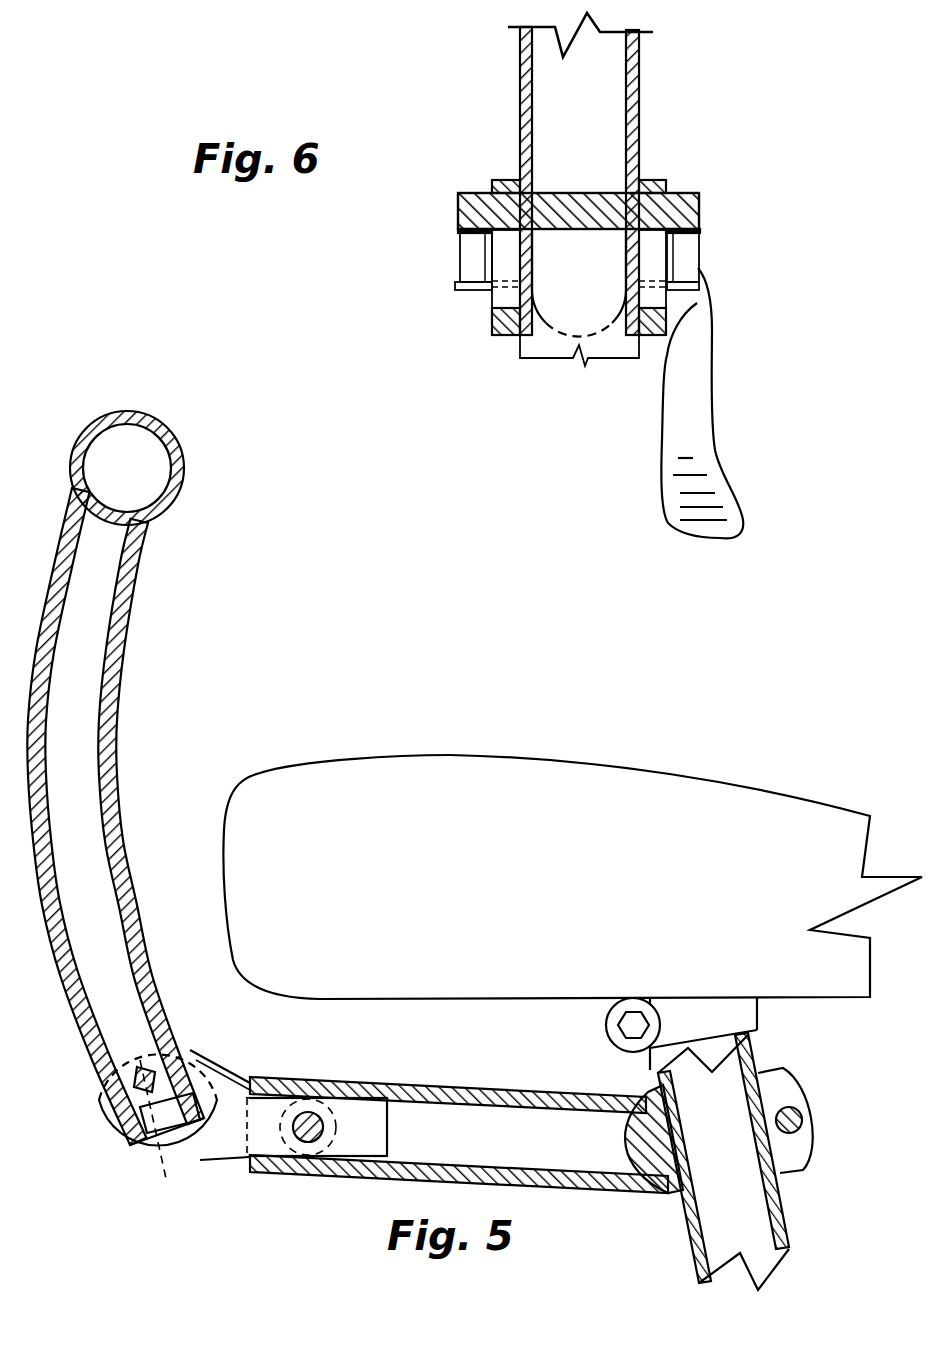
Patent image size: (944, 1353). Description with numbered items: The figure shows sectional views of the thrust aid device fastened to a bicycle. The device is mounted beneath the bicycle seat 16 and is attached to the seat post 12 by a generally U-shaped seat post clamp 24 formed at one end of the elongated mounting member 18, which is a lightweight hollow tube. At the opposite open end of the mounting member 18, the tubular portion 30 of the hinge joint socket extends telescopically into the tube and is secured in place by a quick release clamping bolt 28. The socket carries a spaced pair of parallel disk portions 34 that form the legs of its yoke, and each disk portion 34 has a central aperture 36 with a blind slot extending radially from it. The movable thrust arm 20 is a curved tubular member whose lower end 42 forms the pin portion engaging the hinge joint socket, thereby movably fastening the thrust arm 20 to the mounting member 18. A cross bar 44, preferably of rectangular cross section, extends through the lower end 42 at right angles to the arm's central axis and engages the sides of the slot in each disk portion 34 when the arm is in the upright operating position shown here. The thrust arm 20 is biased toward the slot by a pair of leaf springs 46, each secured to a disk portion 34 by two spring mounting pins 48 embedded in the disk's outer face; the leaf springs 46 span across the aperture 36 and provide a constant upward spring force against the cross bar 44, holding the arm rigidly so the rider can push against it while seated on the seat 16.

In FIG. 5, the seat post 12 is at (790, 1205).
In FIG. 5, the bicycle seat 16 is at (655, 895).
In FIG. 5, the mounting member 18 is at (545, 1085).
In FIG. 6, the thrust arm 20 is at (640, 90).
In FIG. 5, the thrust arm 20 is at (118, 840).
In FIG. 5, the seat post clamp 24 is at (790, 1072).
In FIG. 6, the quick release clamping bolt 28 is at (712, 360).
In FIG. 5, the quick release clamping bolt 28 is at (305, 1142).
In FIG. 5, the tubular portion 30 is at (390, 1120).
In FIG. 6, the disk portion 34 is at (508, 337).
In FIG. 6, the central aperture 36 is at (500, 298).
In FIG. 6, the lower end 42 is at (640, 165).
In FIG. 6, the cross bar 44 is at (700, 208).
In FIG. 5, the cross bar 44 is at (140, 1043).
In FIG. 6, the leaf spring 46 is at (462, 238).
In FIG. 5, the leaf spring 46 is at (167, 1153).
In FIG. 6, the spring mounting pin 48 is at (458, 283).